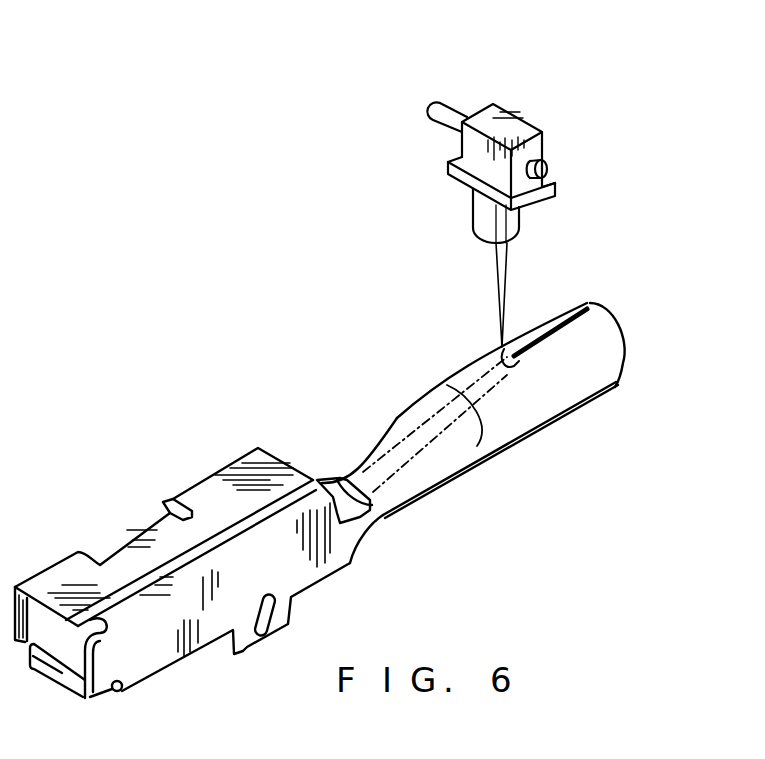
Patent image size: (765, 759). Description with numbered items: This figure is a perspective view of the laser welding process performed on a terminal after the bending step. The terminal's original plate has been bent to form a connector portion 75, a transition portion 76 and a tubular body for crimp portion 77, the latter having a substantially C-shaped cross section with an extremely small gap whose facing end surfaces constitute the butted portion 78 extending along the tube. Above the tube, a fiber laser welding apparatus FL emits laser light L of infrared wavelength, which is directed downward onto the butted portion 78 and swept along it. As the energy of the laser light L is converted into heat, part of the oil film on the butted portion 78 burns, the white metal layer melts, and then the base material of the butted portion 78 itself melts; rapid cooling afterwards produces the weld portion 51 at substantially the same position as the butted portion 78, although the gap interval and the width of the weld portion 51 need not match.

The connector portion 75 is at (223, 464).
The transition portion 76 is at (373, 538).
The tubular body for crimp portion 77 is at (550, 425).
The butted portion 78 is at (570, 311).
The weld portion 51 is at (418, 428).
The fiber laser welding apparatus FL is at (527, 122).
The laser light L is at (497, 272).